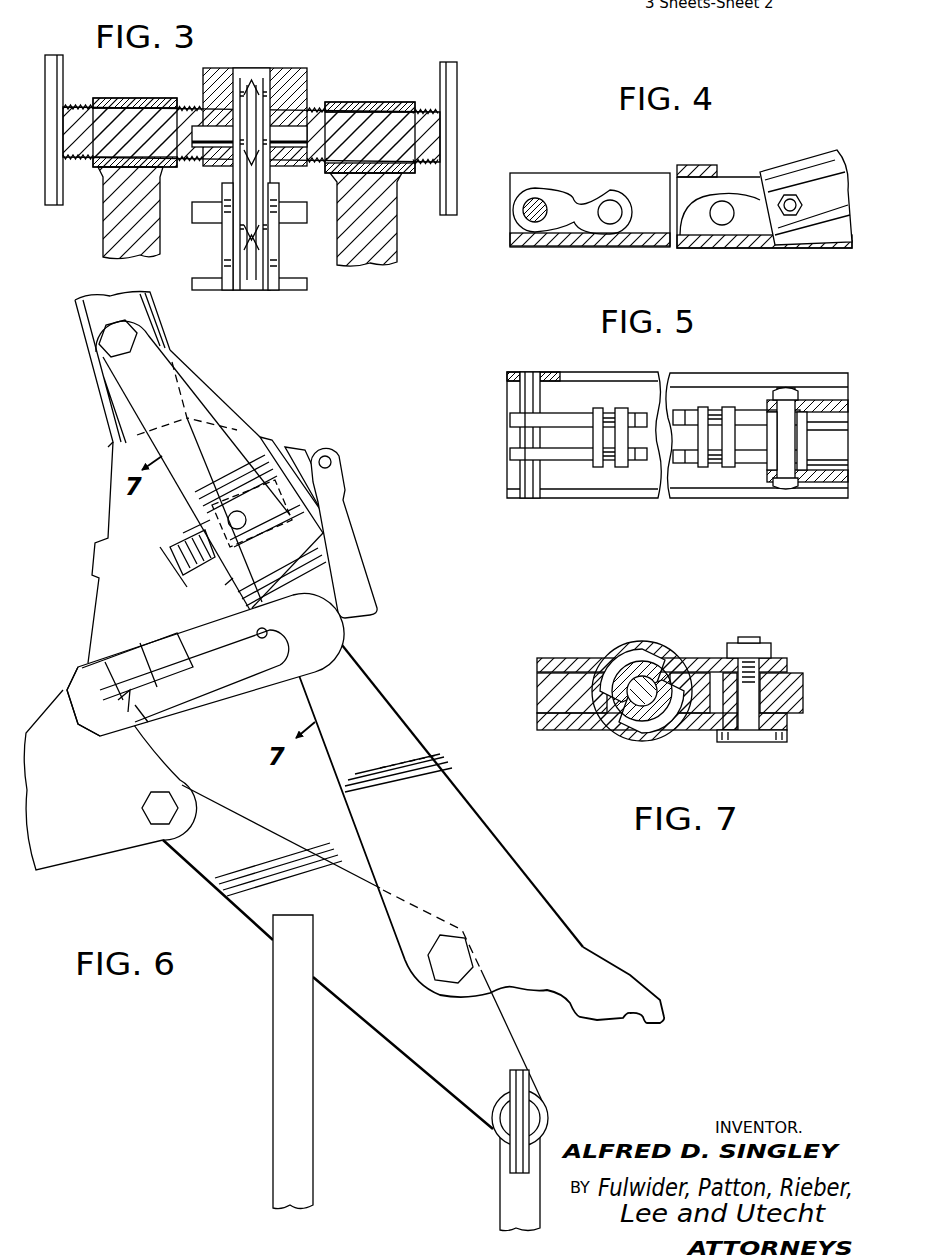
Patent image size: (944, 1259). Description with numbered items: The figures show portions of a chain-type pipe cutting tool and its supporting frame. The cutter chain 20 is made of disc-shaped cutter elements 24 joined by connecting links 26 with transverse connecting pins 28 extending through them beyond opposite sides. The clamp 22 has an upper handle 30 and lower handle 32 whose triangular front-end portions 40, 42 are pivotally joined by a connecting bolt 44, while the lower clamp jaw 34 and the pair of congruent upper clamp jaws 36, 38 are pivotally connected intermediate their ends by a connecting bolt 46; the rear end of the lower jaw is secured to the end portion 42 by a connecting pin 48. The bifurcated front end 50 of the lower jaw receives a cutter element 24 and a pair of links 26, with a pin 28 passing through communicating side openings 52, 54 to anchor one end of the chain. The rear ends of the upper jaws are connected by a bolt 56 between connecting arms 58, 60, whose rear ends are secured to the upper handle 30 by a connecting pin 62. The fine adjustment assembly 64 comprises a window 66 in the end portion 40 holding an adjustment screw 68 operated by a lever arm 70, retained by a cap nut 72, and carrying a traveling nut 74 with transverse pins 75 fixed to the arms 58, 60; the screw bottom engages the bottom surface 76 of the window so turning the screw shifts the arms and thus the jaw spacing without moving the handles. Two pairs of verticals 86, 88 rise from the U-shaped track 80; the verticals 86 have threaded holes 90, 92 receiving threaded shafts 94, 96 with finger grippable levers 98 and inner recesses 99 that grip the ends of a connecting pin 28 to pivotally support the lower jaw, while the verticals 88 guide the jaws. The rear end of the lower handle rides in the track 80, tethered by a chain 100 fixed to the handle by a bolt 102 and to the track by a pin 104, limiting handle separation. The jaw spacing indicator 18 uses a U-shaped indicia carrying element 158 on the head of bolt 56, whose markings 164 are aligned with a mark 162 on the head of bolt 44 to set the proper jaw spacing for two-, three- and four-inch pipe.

In FIG. 6, the jaw spacing indicator 18 is at (238, 700).
In FIG. 3, the cutter chain 20 is at (289, 300).
In FIG. 6, the clamp 22 is at (512, 847).
In FIG. 3, the cutter elements 24 is at (234, 166).
In FIG. 3, the connecting links 26 is at (252, 80).
In FIG. 3, the transverse connecting pins 28 is at (297, 210).
In FIG. 6, the upper handle 30 is at (155, 313).
In FIG. 4, the lower handle 32 is at (808, 232).
In FIG. 5, the lower handle 32 is at (822, 400).
In FIG. 6, the lower clamp jaw 34 is at (252, 920).
In FIG. 7, the upper clamp jaw 36 is at (804, 694).
In FIG. 6, the upper clamp jaw 36 is at (414, 745).
In FIG. 7, the upper clamp jaw 38 is at (803, 678).
In FIG. 7, the front-end portion 40 is at (540, 690).
In FIG. 6, the front-end portion 40 is at (100, 538).
In FIG. 6, the front-end portion 42 is at (83, 847).
In FIG. 6, the connecting bolt 44 is at (76, 690).
In FIG. 6, the connecting bolt 46 is at (460, 957).
In FIG. 6, the connecting pin 48 is at (143, 809).
In FIG. 3, the front end 50 is at (273, 107).
In FIG. 6, the front end 50 is at (492, 1124).
In FIG. 3, the side opening 52 is at (290, 110).
In FIG. 3, the side opening 54 is at (207, 127).
In FIG. 7, the bolt 56 is at (756, 638).
In FIG. 7, the connecting arm 58 is at (592, 658).
In FIG. 7, the connecting arm 60 is at (598, 727).
In FIG. 6, the connecting arm 60 is at (205, 392).
In FIG. 6, the connecting pin 62 is at (100, 341).
In FIG. 6, the fine adjustment assembly 64 is at (302, 445).
In FIG. 7, the window 66 is at (612, 727).
In FIG. 6, the window 66 is at (183, 533).
In FIG. 7, the adjustment screw 68 is at (652, 680).
In FIG. 6, the adjustment screw 68 is at (175, 562).
In FIG. 6, the lever arm 70 is at (378, 606).
In FIG. 6, the cap nut 72 is at (286, 453).
In FIG. 7, the traveling nut 74 is at (675, 733).
In FIG. 6, the traveling nut 74 is at (224, 587).
In FIG. 7, the transverse pins 75 is at (638, 650).
In FIG. 6, the transverse pins 75 is at (246, 518).
In FIG. 6, the bottom surface 76 is at (162, 548).
In FIG. 4, the track 80 is at (722, 188).
In FIG. 5, the track 80 is at (720, 380).
In FIG. 3, the verticals 86 is at (106, 240).
In FIG. 6, the verticals 86 is at (502, 1206).
In FIG. 6, the verticals 88 is at (276, 1004).
In FIG. 3, the threaded hole 90 is at (372, 118).
In FIG. 3, the threaded hole 92 is at (118, 115).
In FIG. 3, the threaded shaft 94 is at (398, 118).
In FIG. 6, the threaded shaft 94 is at (502, 1116).
In FIG. 3, the threaded shaft 96 is at (80, 110).
In FIG. 3, the finger grippable levers 98 is at (52, 62).
In FIG. 6, the finger grippable levers 98 is at (524, 1079).
In FIG. 3, the recesses 99 is at (188, 127).
In FIG. 4, the chain 100 is at (625, 197).
In FIG. 5, the chain 100 is at (622, 412).
In FIG. 4, the bolt 102 is at (790, 200).
In FIG. 5, the bolt 102 is at (787, 492).
In FIG. 4, the pin 104 is at (537, 203).
In FIG. 5, the pin 104 is at (530, 376).
In FIG. 7, the indicia carrying element 158 is at (755, 744).
In FIG. 6, the indicia carrying element 158 is at (170, 703).
In FIG. 6, the mark 162 is at (148, 678).
In FIG. 6, the markings 164 is at (173, 645).